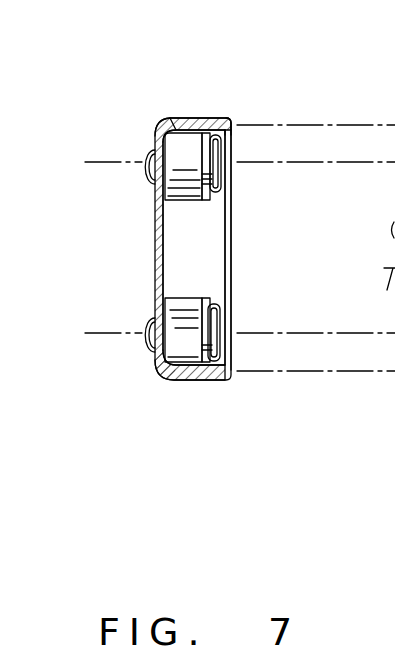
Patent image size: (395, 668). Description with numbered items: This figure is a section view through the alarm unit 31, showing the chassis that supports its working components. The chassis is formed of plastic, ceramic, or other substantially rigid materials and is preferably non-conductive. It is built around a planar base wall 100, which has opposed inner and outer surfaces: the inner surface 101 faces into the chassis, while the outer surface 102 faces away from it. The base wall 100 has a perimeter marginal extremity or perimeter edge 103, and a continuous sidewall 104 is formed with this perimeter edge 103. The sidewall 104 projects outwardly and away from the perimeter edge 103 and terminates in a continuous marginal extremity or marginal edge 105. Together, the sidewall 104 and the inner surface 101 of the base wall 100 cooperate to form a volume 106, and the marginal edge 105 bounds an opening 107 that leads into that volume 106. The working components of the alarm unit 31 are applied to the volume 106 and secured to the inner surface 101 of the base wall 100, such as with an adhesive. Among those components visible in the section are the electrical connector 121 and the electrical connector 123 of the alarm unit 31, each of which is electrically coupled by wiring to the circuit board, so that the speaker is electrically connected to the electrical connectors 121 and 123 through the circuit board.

The alarm unit 31 is at (165, 379).
The base wall 100 is at (163, 247).
The inner surface 101 is at (165, 268).
The outer surface 102 is at (162, 210).
The perimeter edge 103 is at (165, 121).
The continuous sidewall 104 is at (206, 121).
The marginal edge 105 is at (232, 121).
The volume 106 is at (214, 284).
The opening 107 is at (226, 210).
The electrical connector 121 is at (220, 152).
The electrical connector 123 is at (218, 321).